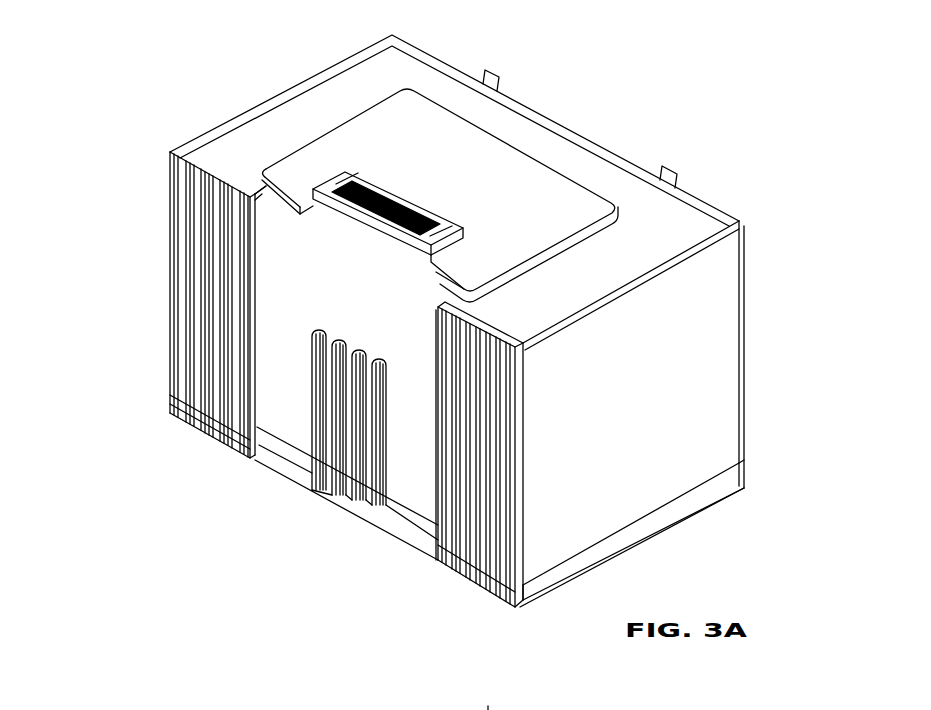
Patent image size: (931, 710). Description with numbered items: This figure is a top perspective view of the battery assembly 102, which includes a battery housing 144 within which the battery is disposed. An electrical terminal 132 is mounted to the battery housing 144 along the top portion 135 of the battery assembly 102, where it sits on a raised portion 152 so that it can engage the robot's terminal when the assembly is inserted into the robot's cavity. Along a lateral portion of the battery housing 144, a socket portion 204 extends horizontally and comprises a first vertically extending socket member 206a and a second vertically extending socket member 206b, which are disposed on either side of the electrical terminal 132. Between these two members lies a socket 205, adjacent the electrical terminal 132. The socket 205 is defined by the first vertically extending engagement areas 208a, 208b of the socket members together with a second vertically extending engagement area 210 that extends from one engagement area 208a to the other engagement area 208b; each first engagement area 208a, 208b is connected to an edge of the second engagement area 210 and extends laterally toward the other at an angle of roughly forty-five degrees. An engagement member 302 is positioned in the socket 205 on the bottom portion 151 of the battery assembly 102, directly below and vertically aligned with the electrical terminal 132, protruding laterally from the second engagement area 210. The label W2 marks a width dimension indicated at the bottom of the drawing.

The battery assembly 102 is at (732, 132).
The electrical terminal 132 is at (420, 200).
The top portion 135 is at (150, 160).
The battery housing 144 is at (722, 387).
The bottom portion 151 is at (148, 362).
The raised portion 152 is at (541, 219).
The socket portion 204 is at (407, 660).
The socket 205 is at (287, 462).
The first vertically extending socket member 206a is at (240, 448).
The second vertically extending socket member 206b is at (430, 558).
The first vertically extending engagement area 208a is at (257, 325).
The first vertically extending engagement area 208b is at (437, 397).
The second vertically extending engagement area 210 is at (319, 304).
The engagement member 302 is at (343, 521).
The width W2 is at (490, 696).